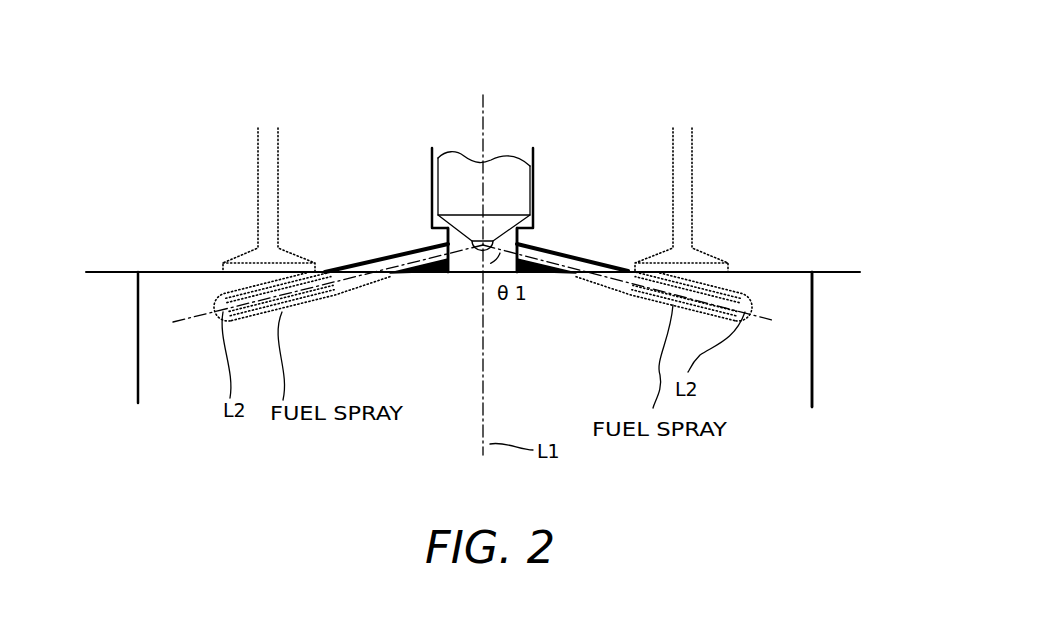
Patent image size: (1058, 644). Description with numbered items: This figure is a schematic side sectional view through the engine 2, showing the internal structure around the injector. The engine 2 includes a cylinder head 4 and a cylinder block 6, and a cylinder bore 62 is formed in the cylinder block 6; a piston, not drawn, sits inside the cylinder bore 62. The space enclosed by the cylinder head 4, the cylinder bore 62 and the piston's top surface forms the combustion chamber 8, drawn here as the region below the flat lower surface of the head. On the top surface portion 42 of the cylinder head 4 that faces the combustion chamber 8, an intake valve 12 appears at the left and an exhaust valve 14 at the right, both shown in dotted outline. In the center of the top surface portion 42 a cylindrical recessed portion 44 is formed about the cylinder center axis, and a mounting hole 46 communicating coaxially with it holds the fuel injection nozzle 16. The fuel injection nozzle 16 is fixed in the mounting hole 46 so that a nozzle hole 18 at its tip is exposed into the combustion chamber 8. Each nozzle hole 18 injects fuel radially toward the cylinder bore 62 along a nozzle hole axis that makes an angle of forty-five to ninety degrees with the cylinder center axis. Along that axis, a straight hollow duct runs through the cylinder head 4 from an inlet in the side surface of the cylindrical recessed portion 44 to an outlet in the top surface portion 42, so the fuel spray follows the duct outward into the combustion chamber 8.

The engine 2 is at (782, 72).
The cylinder head 4 is at (803, 252).
The cylinder block 6 is at (828, 343).
The combustion chamber 8 is at (757, 373).
The intake valve 12 is at (258, 140).
The exhaust valve 14 is at (693, 140).
The fuel injection nozzle 16 is at (503, 170).
The nozzle hole 18 is at (470, 258).
The top surface portion 42 is at (418, 274).
The cylindrical recessed portion 44 is at (456, 273).
The mounting hole 46 is at (532, 198).
The cylinder bore 62 is at (137, 330).